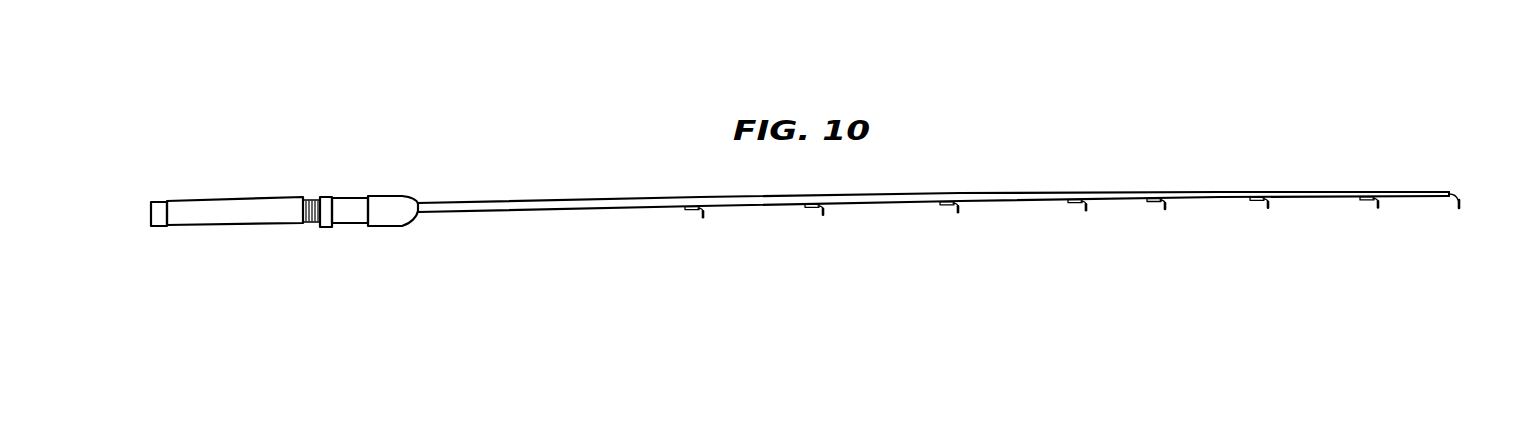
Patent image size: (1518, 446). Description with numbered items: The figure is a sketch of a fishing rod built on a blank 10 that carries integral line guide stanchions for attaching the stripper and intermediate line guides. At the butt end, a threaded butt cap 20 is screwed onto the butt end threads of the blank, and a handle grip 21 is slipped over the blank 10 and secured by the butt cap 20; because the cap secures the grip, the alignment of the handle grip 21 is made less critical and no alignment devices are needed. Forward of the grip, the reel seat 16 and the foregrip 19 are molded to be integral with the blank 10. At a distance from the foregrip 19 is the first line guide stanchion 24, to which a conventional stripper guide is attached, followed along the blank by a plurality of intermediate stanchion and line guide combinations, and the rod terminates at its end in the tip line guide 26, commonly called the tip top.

The blank 10 is at (532, 213).
The reel seat 16 is at (347, 224).
The foregrip 19 is at (403, 227).
The threaded butt cap 20 is at (162, 227).
The handle grip 21 is at (268, 226).
The first line guide stanchion 24 is at (693, 210).
The tip line guide 26 is at (1459, 208).